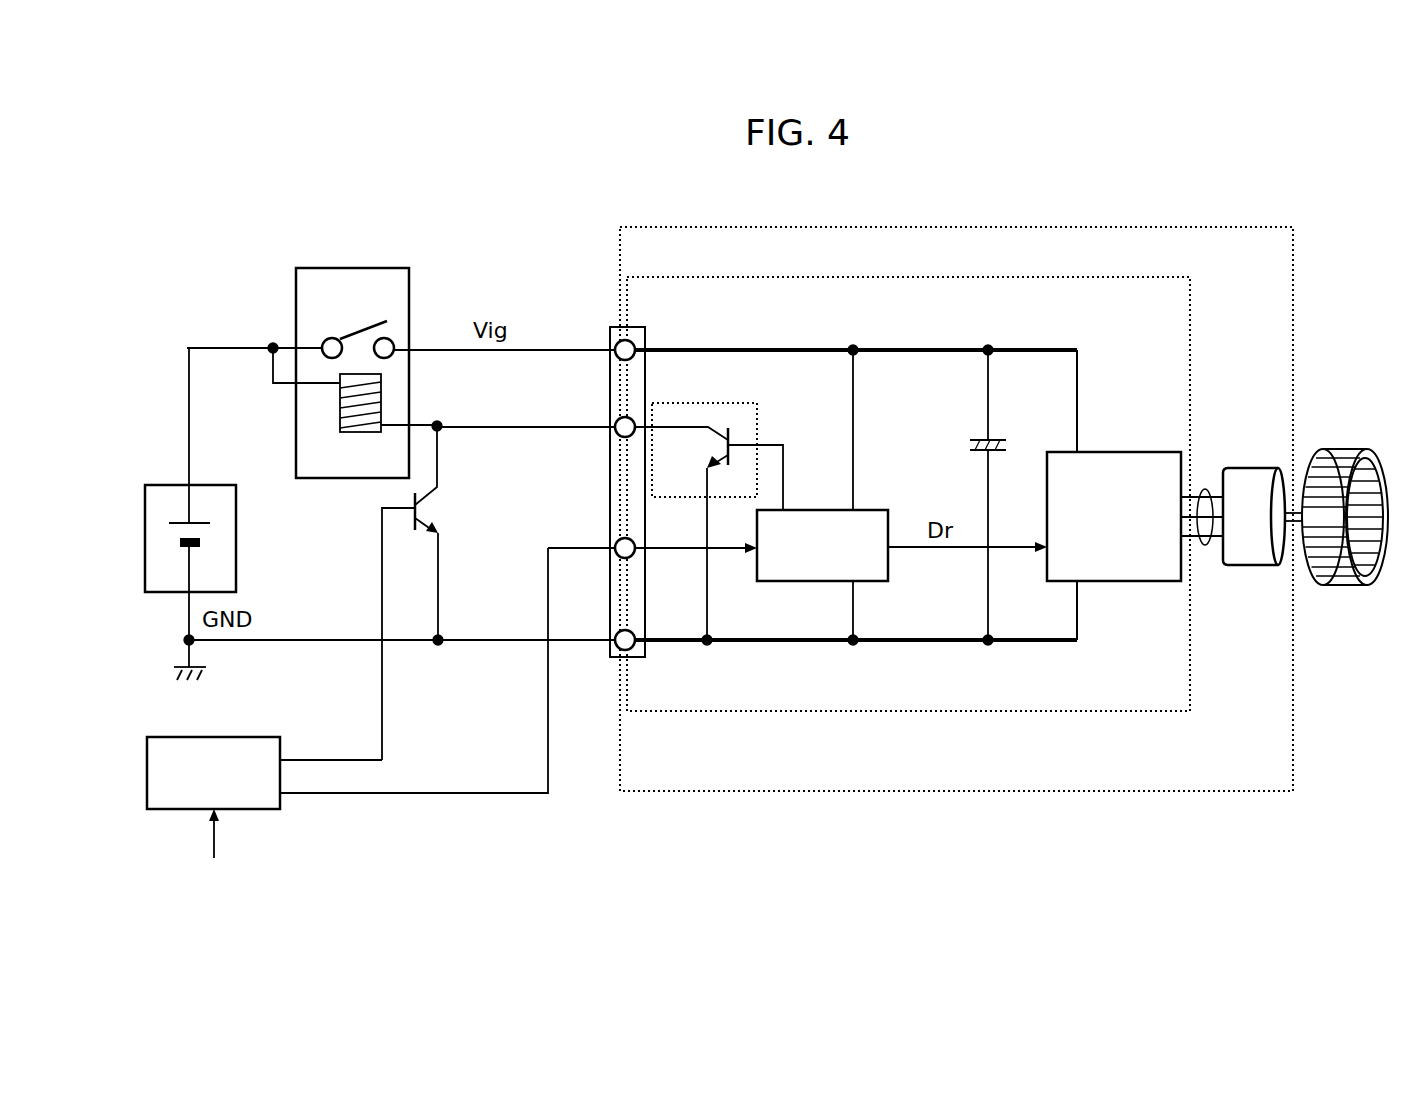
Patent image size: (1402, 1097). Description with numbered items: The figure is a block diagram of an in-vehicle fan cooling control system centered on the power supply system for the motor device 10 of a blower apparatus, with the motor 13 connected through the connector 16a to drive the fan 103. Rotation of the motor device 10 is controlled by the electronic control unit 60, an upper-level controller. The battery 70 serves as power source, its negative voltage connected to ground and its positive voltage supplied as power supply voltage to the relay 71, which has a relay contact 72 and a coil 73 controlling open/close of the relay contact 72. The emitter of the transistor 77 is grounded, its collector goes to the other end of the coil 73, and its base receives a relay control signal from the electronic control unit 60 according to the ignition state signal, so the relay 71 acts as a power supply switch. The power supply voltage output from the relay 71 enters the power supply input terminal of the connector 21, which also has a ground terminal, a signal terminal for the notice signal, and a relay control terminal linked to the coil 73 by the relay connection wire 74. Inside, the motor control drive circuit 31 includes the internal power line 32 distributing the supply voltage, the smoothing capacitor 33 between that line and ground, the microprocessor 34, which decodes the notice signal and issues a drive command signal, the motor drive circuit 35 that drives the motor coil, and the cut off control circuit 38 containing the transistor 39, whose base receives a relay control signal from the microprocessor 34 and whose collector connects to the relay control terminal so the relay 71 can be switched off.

The motor device 10 is at (1030, 227).
The motor 13 is at (1238, 465).
The connector 16a is at (1208, 545).
The connector 21 is at (617, 325).
The motor control drive circuit 31 is at (1073, 277).
The internal power line 32 is at (898, 348).
The smoothing capacitor 33 is at (970, 433).
The microprocessor 34 is at (823, 581).
The motor drive circuit 35 is at (1098, 451).
The cut off control circuit 38 is at (678, 400).
The transistor 39 is at (715, 441).
The electronic control unit (ECU) 60 is at (227, 736).
The battery 70 is at (237, 528).
The relay 71 is at (367, 267).
The relay contact 72 is at (348, 338).
The coil 73 is at (369, 433).
The relay connection wire 74 is at (490, 423).
The transistor 77 is at (437, 508).
The blower fan 103 is at (1340, 447).